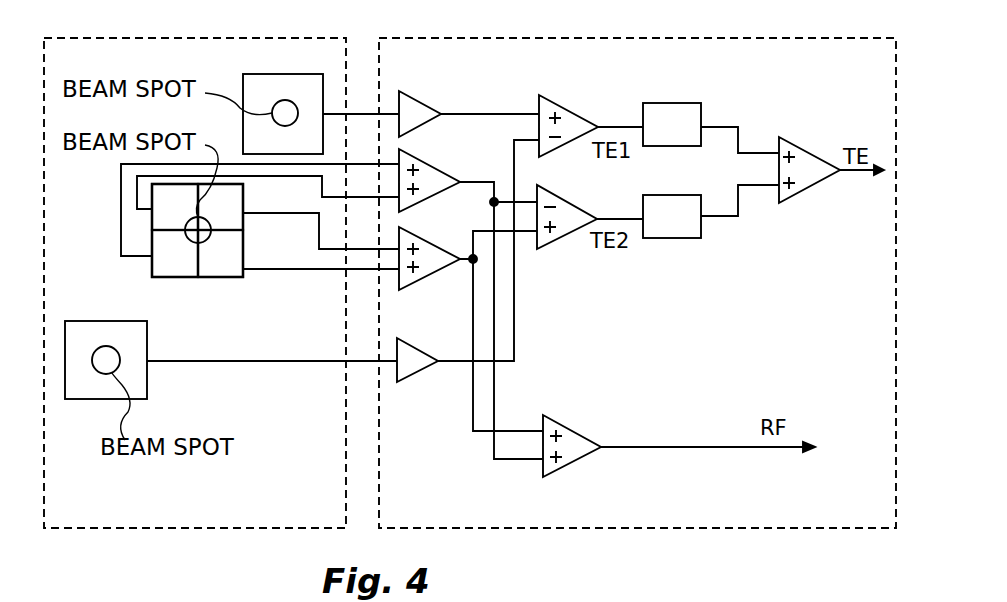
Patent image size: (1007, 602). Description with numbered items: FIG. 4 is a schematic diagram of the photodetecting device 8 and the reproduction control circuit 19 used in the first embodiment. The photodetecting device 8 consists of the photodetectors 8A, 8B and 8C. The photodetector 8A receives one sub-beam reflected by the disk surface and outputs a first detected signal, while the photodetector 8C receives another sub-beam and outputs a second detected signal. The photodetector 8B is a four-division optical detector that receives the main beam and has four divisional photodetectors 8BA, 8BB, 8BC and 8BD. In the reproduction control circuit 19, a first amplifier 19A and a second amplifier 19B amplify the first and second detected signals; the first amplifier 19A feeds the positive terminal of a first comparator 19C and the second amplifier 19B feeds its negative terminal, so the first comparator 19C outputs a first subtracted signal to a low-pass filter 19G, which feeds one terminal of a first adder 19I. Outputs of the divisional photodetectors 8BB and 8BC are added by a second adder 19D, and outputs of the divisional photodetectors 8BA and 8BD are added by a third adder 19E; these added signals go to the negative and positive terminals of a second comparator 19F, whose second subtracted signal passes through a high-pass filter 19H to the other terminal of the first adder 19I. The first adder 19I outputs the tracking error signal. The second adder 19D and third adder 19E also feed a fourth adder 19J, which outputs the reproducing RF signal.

The photodetecting device 8 is at (292, 38).
The reproduction control circuit 19 is at (708, 38).
The photodetector 8A is at (258, 74).
The 4-division photodetector 8B is at (180, 247).
The divisional photodetector 8BA is at (262, 188).
The divisional photodetector 8BB is at (152, 219).
The divisional photodetector 8BC is at (152, 266).
The divisional photodetector 8BD is at (226, 277).
The photodetector 8C is at (72, 399).
The first amplifier 19A is at (407, 91).
The second amplifier 19B is at (428, 351).
The first comparator 19C is at (545, 95).
The second adder 19D is at (414, 157).
The third adder 19E is at (441, 248).
The second comparator 19F is at (548, 188).
The low-pass filter 19G is at (652, 103).
The high-pass filter 19H is at (663, 238).
The first adder 19I is at (812, 152).
The fourth adder 19J is at (563, 415).